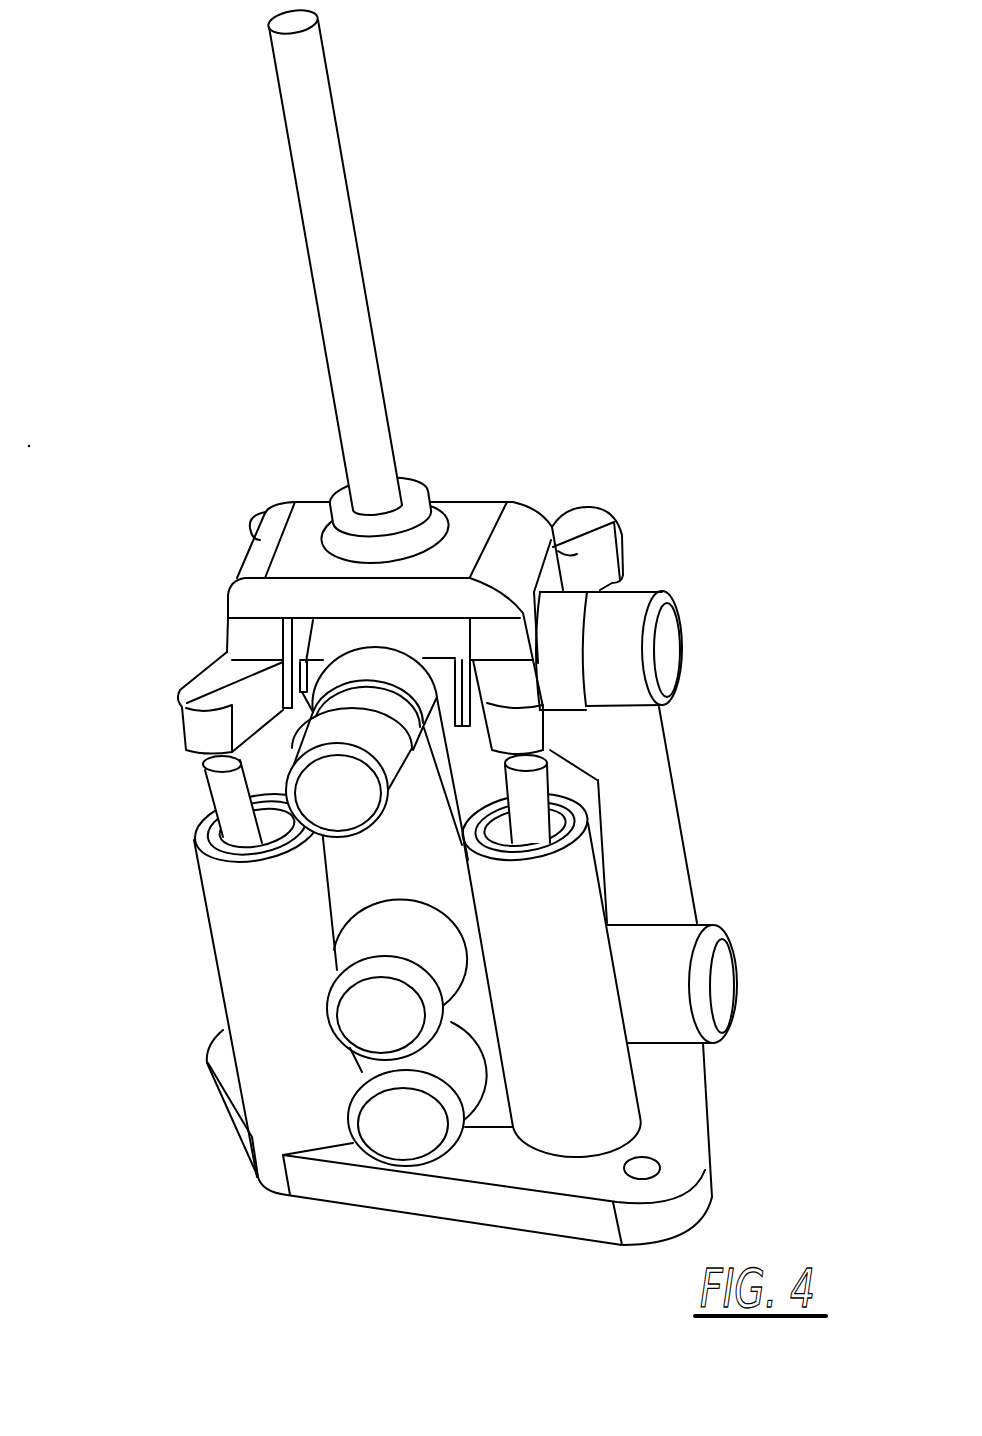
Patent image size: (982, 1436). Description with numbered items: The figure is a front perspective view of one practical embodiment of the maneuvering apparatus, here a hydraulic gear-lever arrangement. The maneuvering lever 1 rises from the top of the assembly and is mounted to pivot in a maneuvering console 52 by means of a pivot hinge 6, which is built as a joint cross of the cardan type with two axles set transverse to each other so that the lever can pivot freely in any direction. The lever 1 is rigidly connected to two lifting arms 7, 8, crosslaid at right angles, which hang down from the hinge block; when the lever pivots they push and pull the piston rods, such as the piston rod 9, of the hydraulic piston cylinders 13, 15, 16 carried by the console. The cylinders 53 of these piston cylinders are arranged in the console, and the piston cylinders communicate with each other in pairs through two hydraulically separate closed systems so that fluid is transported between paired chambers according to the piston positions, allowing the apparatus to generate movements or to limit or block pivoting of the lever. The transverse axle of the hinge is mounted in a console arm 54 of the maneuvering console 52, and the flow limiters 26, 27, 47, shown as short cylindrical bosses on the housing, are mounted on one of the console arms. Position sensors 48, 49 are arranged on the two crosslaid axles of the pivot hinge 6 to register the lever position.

The maneuvering lever 1 is at (382, 327).
The pivot hinge 6 is at (456, 479).
The lifting arm 7 is at (223, 673).
The lifting arm 8 is at (633, 656).
The position sensor 48 is at (660, 651).
The piston rod 9 is at (222, 792).
The hydraulic piston cylinder 15 is at (637, 772).
The hydraulic piston cylinder 16 is at (560, 923).
The flow limiter 27 is at (673, 988).
The position sensor 49 is at (345, 815).
The console arm 54 is at (378, 866).
The hydraulic piston cylinder 13 is at (245, 983).
The flow limiter 47 is at (380, 1017).
The flow limiter 26 is at (410, 1150).
The cylinder 53 is at (263, 1108).
The maneuvering console 52 is at (713, 1130).